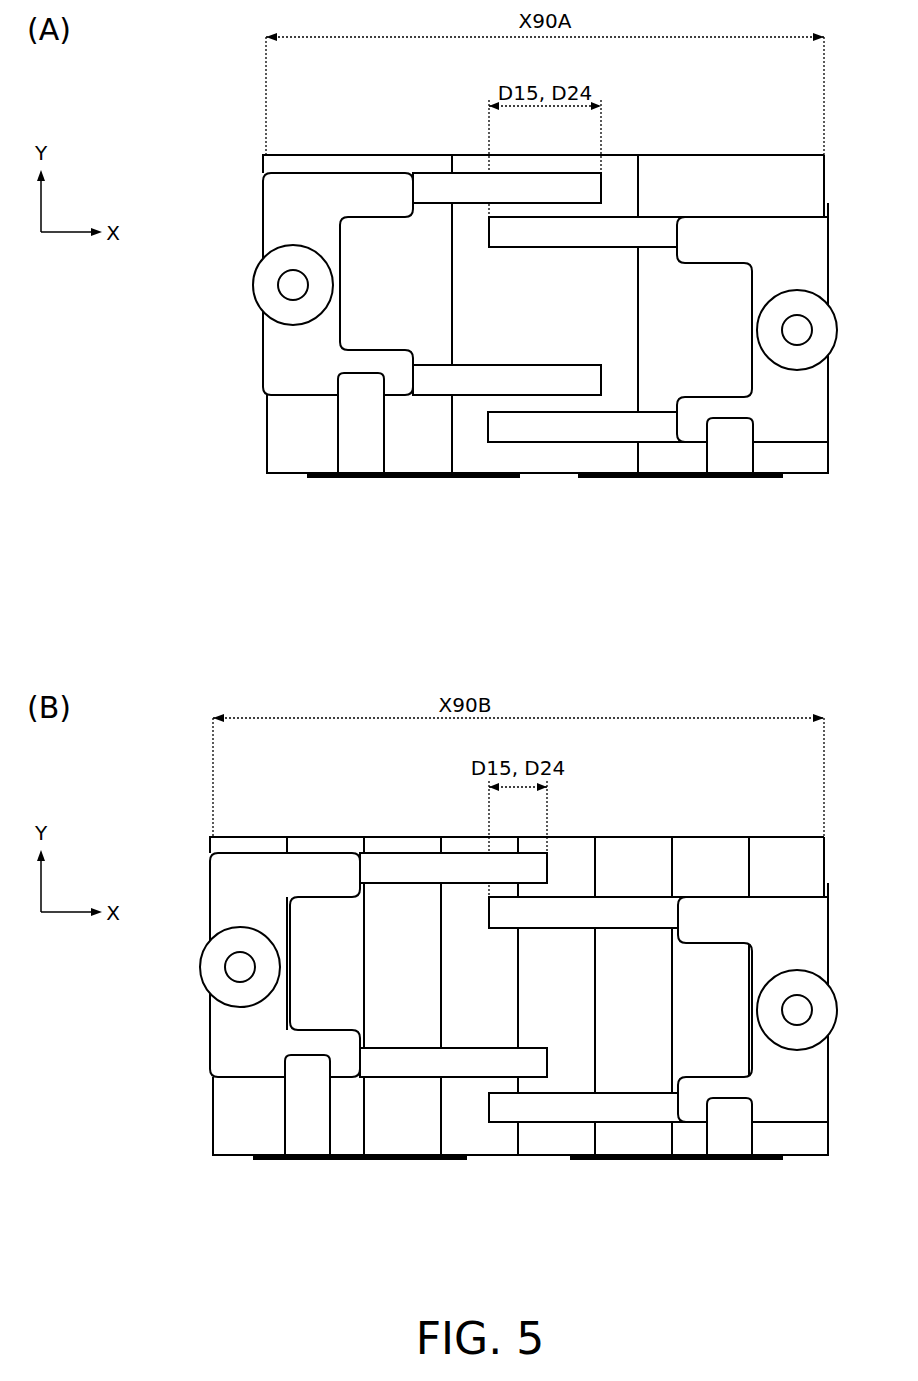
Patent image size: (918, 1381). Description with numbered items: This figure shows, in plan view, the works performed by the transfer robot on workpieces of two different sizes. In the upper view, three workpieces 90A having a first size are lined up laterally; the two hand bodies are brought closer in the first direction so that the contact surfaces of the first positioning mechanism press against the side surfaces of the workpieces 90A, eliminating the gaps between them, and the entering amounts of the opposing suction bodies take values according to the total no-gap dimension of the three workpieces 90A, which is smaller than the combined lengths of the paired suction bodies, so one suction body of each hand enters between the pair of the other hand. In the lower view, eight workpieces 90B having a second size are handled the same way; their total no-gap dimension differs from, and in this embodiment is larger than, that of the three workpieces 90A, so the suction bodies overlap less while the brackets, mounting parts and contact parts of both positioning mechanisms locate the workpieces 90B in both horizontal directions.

The workpiece having a first size 90A is at (380, 165).
The workpiece having a second size 90B is at (262, 843).